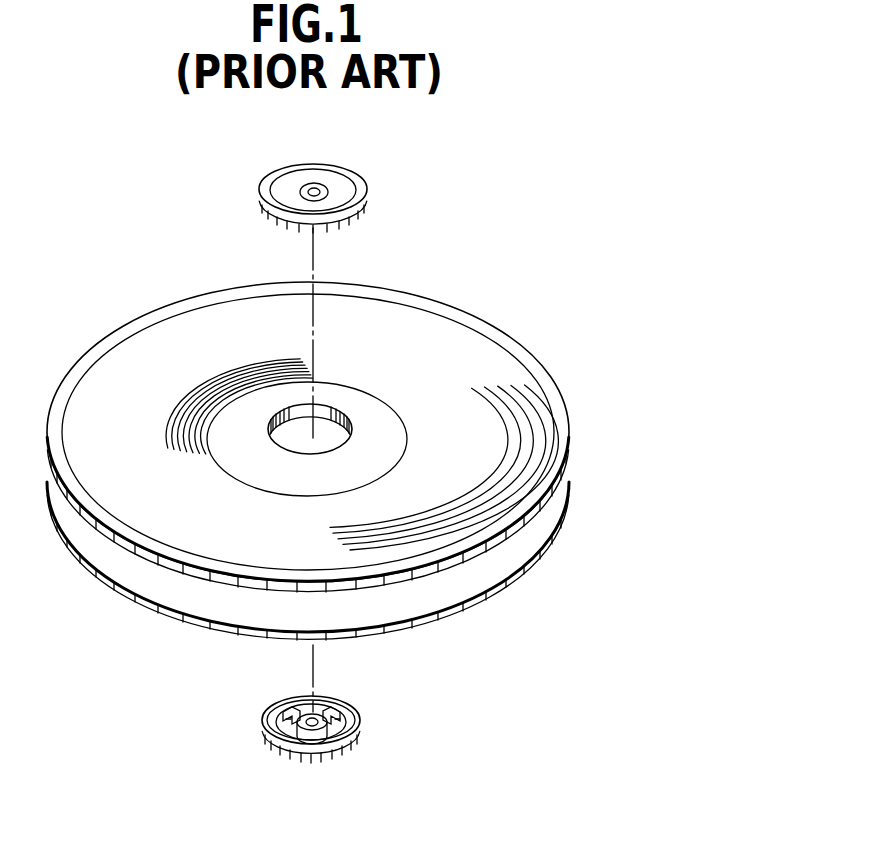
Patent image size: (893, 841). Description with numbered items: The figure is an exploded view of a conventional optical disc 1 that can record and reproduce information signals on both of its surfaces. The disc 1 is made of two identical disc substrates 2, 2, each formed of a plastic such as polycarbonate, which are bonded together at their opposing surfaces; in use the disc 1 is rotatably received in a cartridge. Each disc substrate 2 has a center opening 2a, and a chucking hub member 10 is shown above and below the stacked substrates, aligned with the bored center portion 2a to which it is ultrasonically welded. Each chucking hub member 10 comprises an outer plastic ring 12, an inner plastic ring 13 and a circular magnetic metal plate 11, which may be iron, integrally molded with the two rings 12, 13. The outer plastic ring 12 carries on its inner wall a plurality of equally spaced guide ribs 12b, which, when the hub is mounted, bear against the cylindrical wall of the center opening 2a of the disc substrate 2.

The optical disc 1 is at (570, 429).
The disc substrate 2 is at (499, 330).
The center opening 2a is at (340, 410).
The chucking hub member 10 is at (366, 181).
The circular magnetic metal plate 11 is at (290, 183).
The outer plastic ring 12 is at (258, 198).
The guide rib 12b is at (345, 709).
The inner plastic ring 13 is at (330, 192).